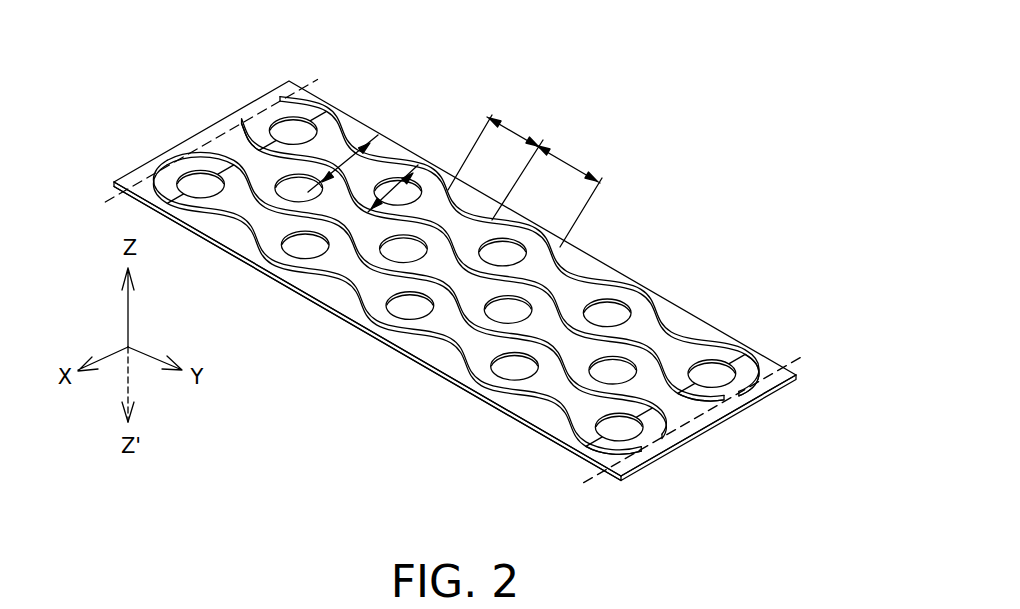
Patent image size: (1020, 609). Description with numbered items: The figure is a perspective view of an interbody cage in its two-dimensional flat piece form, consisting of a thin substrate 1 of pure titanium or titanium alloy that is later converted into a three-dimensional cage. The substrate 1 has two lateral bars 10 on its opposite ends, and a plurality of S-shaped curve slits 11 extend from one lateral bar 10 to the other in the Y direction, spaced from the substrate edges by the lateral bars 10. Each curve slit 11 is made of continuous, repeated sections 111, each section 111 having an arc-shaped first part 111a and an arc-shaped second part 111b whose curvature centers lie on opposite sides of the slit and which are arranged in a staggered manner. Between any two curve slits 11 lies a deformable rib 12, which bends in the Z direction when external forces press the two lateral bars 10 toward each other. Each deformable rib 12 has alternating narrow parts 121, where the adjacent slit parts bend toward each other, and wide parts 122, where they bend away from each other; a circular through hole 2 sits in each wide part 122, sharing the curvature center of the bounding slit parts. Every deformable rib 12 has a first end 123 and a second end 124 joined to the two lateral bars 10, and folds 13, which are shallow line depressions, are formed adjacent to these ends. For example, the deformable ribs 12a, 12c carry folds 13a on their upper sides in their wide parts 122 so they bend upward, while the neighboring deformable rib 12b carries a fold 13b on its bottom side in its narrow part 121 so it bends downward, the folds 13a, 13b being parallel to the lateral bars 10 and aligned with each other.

The substrate 1 is at (697, 323).
The through holes 2 is at (410, 302).
The lateral bars 10 is at (158, 158).
The curve slits 11 is at (653, 312).
The deformable rib 12 is at (572, 296).
The deformable rib 12a is at (740, 387).
The deformable rib 12b is at (697, 422).
The deformable rib 12c is at (654, 434).
The folds 13 is at (468, 432).
The fold 13a is at (585, 430).
The fold 13b is at (580, 452).
The sections 111 is at (506, 56).
The first part 111a is at (513, 128).
The second part 111b is at (570, 158).
The narrow parts 121 is at (350, 158).
The wide parts 122 is at (388, 186).
The first end 123 is at (222, 143).
The second end 124 is at (708, 417).